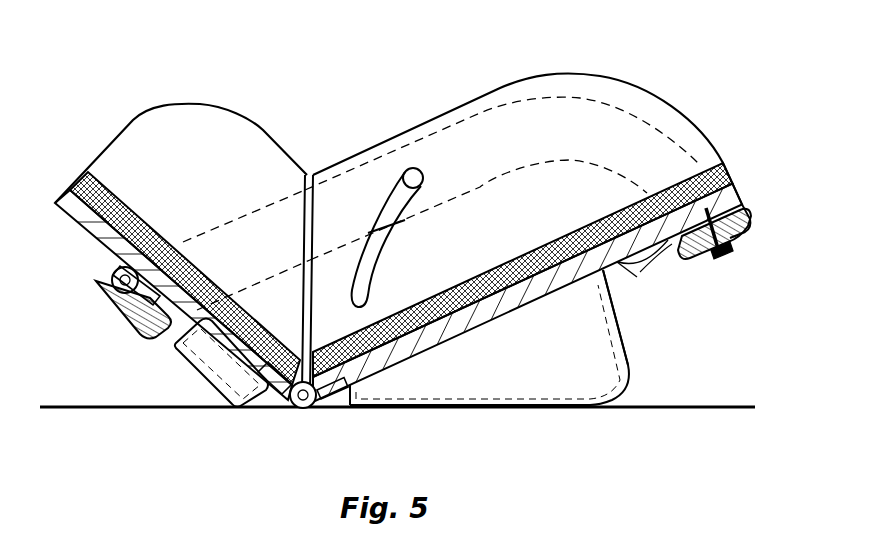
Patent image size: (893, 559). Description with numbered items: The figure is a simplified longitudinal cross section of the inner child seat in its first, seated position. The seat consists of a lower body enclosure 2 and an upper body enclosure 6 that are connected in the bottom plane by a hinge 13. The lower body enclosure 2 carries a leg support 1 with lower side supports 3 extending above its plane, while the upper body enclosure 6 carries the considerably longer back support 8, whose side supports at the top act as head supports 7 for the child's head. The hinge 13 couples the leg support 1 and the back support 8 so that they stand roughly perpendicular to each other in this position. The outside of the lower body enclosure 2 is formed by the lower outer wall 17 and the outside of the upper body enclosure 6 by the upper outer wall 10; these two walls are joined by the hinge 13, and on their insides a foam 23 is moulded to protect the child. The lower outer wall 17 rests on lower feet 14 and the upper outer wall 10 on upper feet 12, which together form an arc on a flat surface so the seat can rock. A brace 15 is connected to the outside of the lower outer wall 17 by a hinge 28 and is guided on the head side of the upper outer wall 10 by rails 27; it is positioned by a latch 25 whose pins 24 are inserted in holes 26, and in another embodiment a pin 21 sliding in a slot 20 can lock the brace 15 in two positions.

The leg support 1 is at (143, 220).
The lower body enclosure 2 is at (103, 113).
The lower side supports 3 is at (205, 112).
The upper body enclosure 6 is at (598, 57).
The head supports 7 is at (486, 98).
The back support 8 is at (665, 185).
The upper outer wall 10 is at (528, 298).
The upper feet 12 is at (544, 406).
The hinge 13 is at (303, 410).
The lower feet 14 is at (180, 350).
The brace 15 is at (120, 310).
The lower outer wall 17 is at (80, 216).
The slot 20 is at (376, 252).
The pin 21 is at (410, 167).
The foam 23 is at (197, 262).
The pins 24 is at (748, 222).
The latch 25 is at (720, 262).
The holes 26 is at (668, 252).
The rails 27 is at (636, 276).
The hinge 28 is at (113, 273).